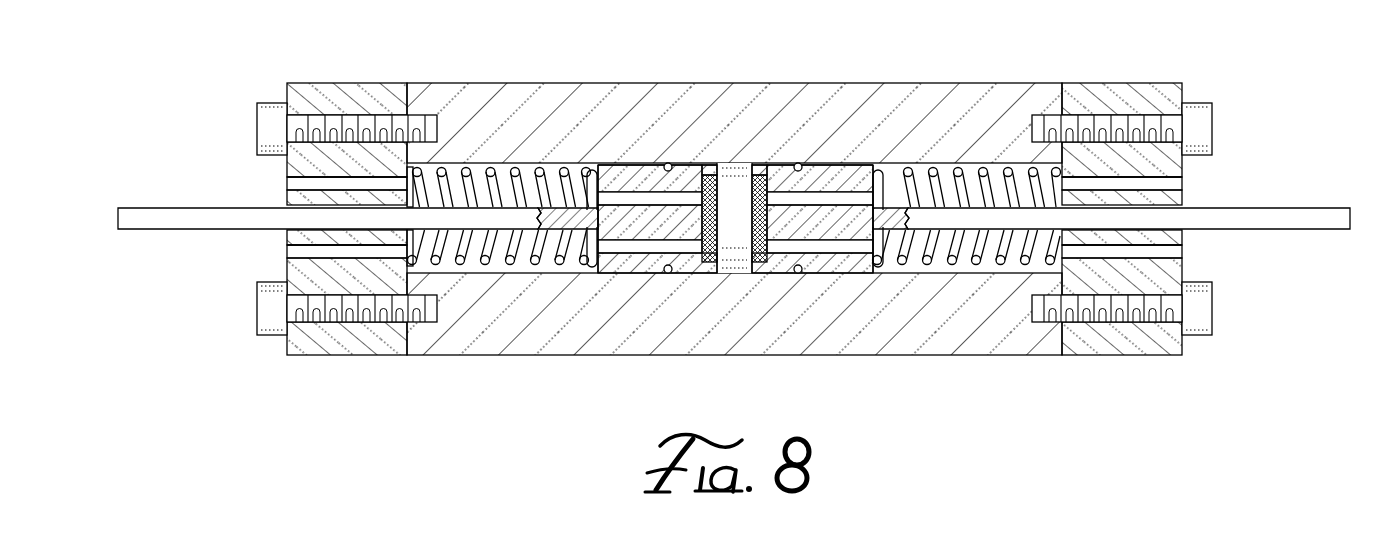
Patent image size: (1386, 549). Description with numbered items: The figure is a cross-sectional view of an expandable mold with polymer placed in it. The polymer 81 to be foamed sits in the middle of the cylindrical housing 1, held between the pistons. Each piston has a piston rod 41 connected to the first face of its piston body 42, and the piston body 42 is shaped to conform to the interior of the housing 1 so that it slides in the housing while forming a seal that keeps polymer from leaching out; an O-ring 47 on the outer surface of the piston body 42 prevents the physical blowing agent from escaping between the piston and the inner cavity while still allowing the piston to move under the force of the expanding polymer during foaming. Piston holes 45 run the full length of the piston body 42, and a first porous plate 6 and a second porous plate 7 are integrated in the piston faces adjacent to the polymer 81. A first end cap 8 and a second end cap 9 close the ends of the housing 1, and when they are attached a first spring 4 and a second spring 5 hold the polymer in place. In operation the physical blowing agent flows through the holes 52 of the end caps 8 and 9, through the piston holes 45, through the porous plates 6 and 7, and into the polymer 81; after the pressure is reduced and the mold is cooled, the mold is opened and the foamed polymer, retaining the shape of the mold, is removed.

The housing 1 is at (845, 313).
The first spring 4 is at (523, 260).
The second spring 5 is at (990, 260).
The first porous plate 6 is at (700, 213).
The second porous plate 7 is at (763, 223).
The first end cap 8 is at (335, 83).
The second end cap 9 is at (1130, 355).
The first piston rod 41 is at (153, 217).
The first piston body 42 is at (634, 170).
The piston hole 45 is at (842, 187).
The O-ring 47 is at (670, 273).
The holes of the end caps 52 is at (293, 183).
The polymer 81 is at (733, 253).